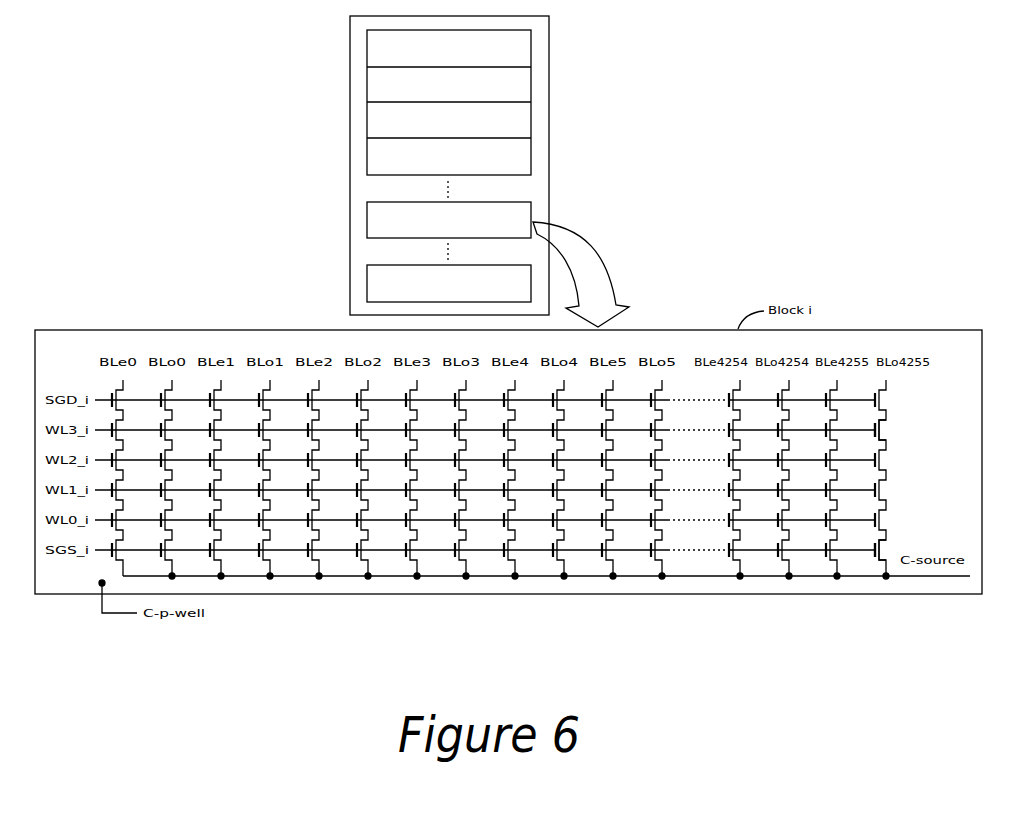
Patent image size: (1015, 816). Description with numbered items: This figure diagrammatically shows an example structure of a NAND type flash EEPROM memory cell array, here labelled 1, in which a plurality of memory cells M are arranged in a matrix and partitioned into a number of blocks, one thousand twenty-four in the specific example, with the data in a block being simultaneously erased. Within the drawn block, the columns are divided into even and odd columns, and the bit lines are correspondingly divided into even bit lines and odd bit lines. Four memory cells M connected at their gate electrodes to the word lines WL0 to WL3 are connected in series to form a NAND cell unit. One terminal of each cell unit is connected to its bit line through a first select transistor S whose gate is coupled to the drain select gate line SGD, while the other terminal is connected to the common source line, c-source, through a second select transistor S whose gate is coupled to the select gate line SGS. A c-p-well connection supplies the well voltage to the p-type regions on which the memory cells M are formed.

The memory cell array 1 is at (549, 99).
The memory cells M is at (887, 423).
The select transistor S is at (878, 552).